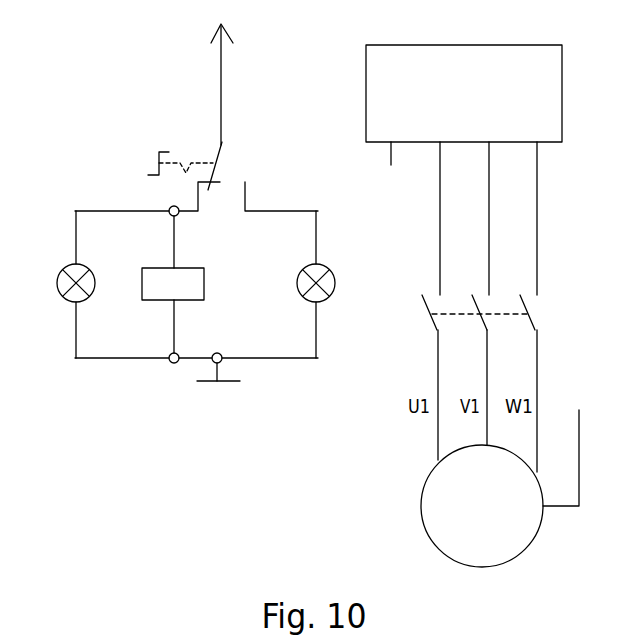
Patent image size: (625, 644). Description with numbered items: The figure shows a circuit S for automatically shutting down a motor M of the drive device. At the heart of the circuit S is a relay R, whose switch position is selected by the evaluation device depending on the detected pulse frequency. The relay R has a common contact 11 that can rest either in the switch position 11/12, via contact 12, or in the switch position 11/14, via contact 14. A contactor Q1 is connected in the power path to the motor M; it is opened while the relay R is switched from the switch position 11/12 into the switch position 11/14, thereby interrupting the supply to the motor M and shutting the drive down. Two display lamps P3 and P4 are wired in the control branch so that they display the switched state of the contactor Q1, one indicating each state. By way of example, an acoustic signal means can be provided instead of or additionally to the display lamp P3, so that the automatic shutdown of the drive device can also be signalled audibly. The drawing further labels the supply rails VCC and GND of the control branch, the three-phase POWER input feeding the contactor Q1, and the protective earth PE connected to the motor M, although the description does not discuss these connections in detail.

The switch position contact 11 is at (210, 157).
The switch position contact 12 is at (194, 199).
The switch position contact 14 is at (270, 196).
The circuit S is at (270, 400).
The relay R is at (180, 150).
The contactor Q1 is at (324, 285).
The display lamp P3 is at (303, 284).
The display lamp P4 is at (62, 284).
The motor M is at (482, 506).
The protective earth PE is at (561, 458).
The ground GND is at (217, 388).
The supply voltage VCC is at (201, 82).
The power input POWER is at (464, 157).